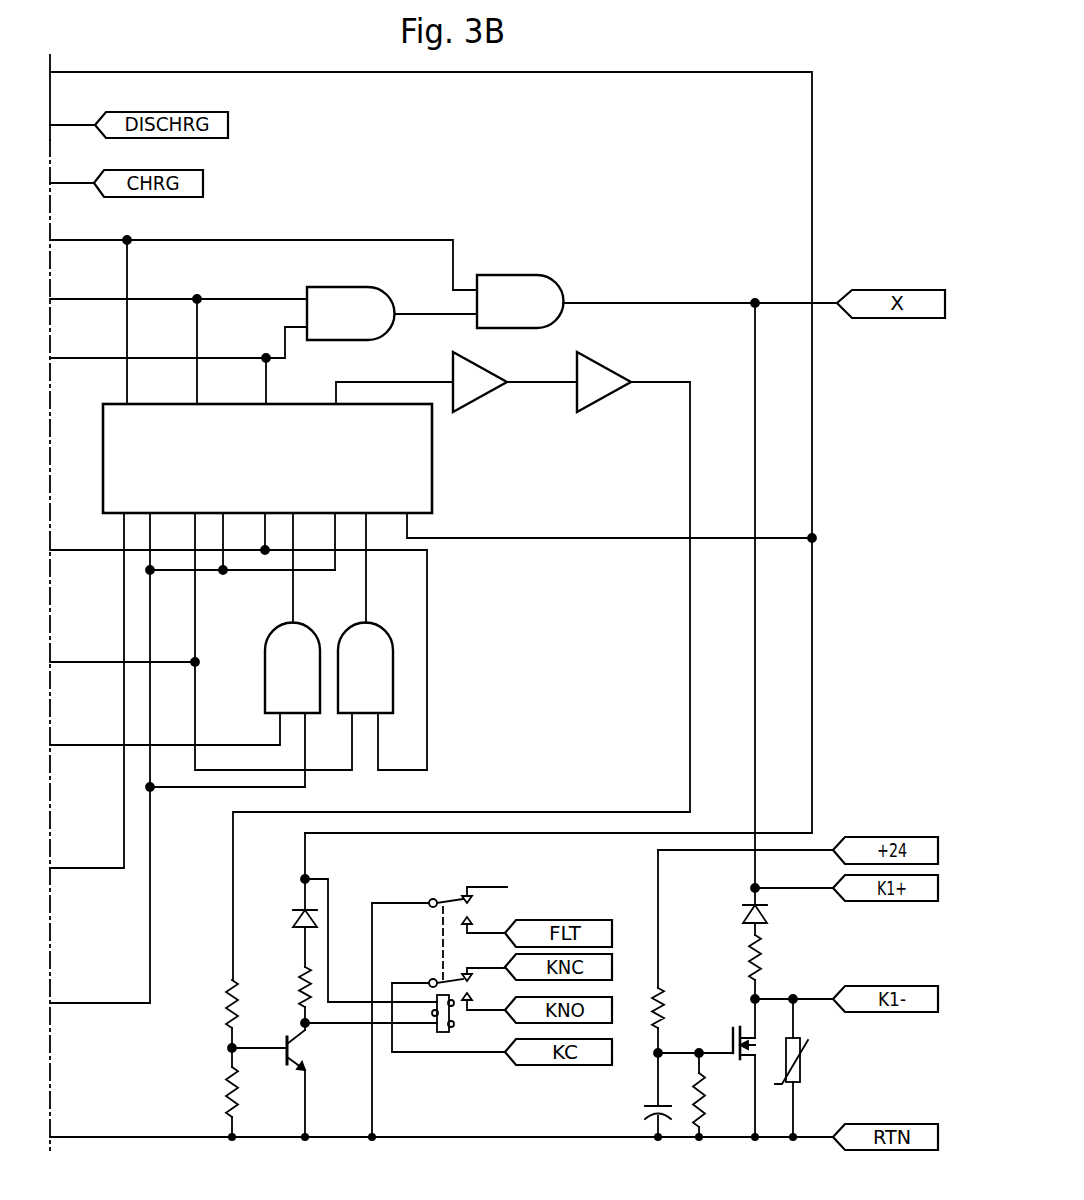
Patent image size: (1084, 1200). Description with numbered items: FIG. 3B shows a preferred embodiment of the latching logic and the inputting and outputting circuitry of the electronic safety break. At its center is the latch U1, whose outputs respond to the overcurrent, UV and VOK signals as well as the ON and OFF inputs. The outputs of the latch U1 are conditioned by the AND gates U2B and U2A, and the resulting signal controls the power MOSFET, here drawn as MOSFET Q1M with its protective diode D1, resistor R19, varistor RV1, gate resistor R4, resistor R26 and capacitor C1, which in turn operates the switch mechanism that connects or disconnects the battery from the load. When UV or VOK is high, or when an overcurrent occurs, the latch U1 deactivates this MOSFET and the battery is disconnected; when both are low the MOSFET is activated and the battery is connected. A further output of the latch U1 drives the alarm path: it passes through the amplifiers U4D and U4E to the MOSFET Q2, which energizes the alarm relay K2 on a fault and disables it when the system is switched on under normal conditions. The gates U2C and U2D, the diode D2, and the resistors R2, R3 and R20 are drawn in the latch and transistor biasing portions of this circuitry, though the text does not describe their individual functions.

The latch U1 is at (267, 458).
The AND gate U2A is at (541, 301).
The AND gate U2B is at (372, 313).
The NAND gate 4061 U2C is at (292, 667).
The NAND gate 4061 U2D is at (365, 667).
The amplifier U4D is at (500, 382).
The amplifier U4E is at (623, 382).
The diode MUR160 D1 is at (725, 928).
The diode 1N4148 D2 is at (279, 928).
The resistor 2K R2 is at (215, 1004).
The resistor 2K R3 is at (215, 1092).
The resistor 10K R4 is at (641, 1008).
The resistor 100 R19 is at (773, 962).
The resistor 100 R20 is at (286, 983).
The resistor 100K R26 is at (722, 1103).
The capacitor 100nF C1 is at (626, 1111).
The varistor 60V RV1 is at (811, 1068).
The MOSFET Q2 is at (295, 1083).
The MOSFET DRF510 Q1M is at (716, 1030).
The alarm relay K2 is at (439, 994).